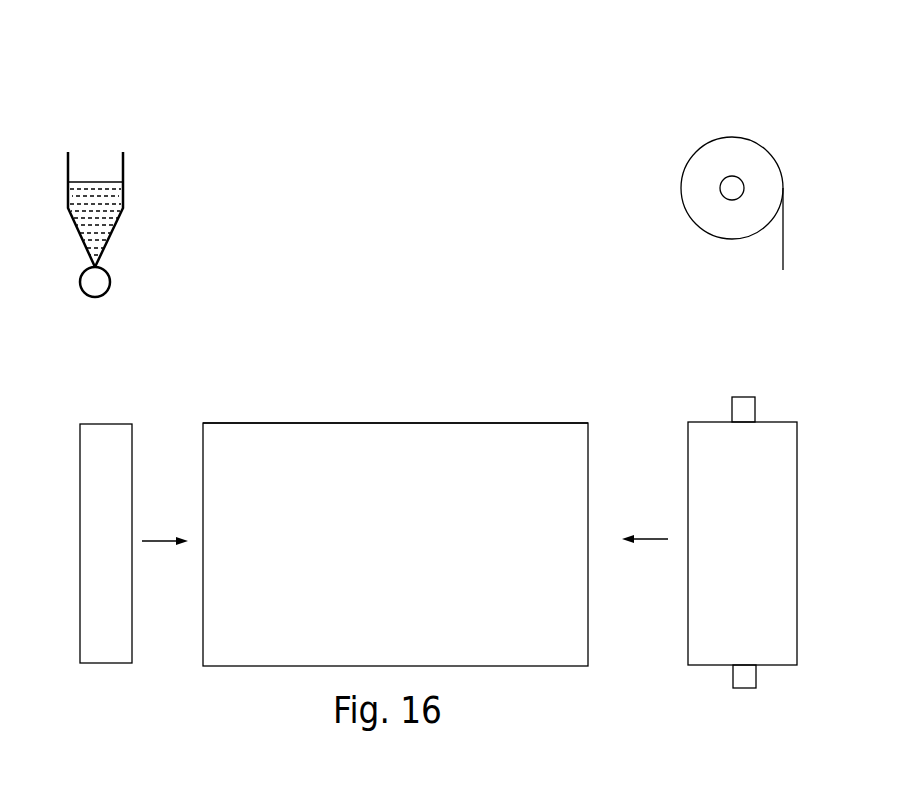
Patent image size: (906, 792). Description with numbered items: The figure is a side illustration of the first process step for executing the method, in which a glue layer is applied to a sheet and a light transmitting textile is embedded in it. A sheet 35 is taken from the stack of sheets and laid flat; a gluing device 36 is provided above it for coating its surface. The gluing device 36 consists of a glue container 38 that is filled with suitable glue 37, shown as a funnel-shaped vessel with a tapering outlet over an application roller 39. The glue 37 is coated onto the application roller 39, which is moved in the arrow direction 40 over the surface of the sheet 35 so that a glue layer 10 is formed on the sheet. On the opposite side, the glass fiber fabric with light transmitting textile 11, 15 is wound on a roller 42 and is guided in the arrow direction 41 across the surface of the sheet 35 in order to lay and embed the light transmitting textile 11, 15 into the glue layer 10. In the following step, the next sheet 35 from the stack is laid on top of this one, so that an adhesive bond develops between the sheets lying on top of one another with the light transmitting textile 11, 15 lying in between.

The glue layer 10 is at (403, 532).
The light transmitting textile 11 is at (749, 163).
The light transmitting textile 15 is at (785, 240).
The sheet 35 is at (437, 423).
The gluing device 36 is at (250, 193).
The glue 37 is at (100, 232).
The glue container 38 is at (127, 168).
The application roller 39 is at (105, 483).
The arrow direction 40 is at (157, 538).
The arrow direction 41 is at (652, 538).
The roller 42 is at (732, 188).